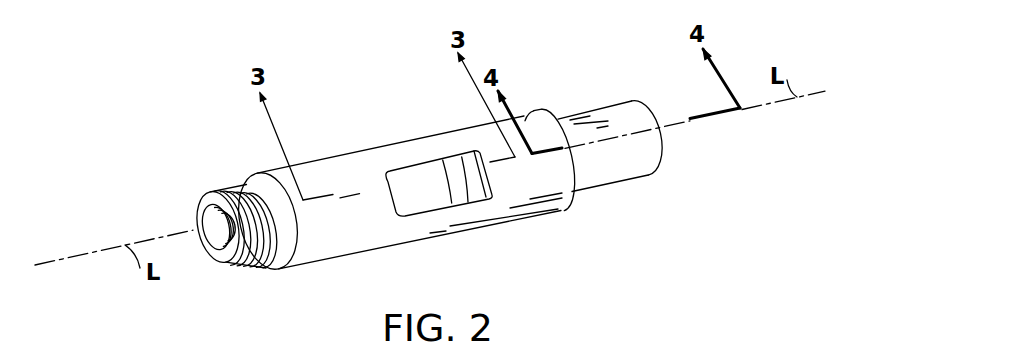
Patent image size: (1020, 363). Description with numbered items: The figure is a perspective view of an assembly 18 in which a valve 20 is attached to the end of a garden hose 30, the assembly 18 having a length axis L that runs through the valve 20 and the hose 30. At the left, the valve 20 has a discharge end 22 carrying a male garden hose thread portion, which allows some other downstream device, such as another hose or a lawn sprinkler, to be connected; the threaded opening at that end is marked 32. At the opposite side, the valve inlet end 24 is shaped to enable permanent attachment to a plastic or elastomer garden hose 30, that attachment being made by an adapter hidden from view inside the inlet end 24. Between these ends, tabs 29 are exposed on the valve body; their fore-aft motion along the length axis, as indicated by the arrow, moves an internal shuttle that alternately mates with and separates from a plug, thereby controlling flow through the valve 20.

The assembly 18 is at (695, 245).
The valve 20 is at (385, 142).
The discharge end 22 is at (228, 192).
The valve inlet end 24 is at (540, 118).
The tabs 29 is at (441, 207).
The garden hose 30 is at (623, 168).
The bore opening 32 is at (209, 220).